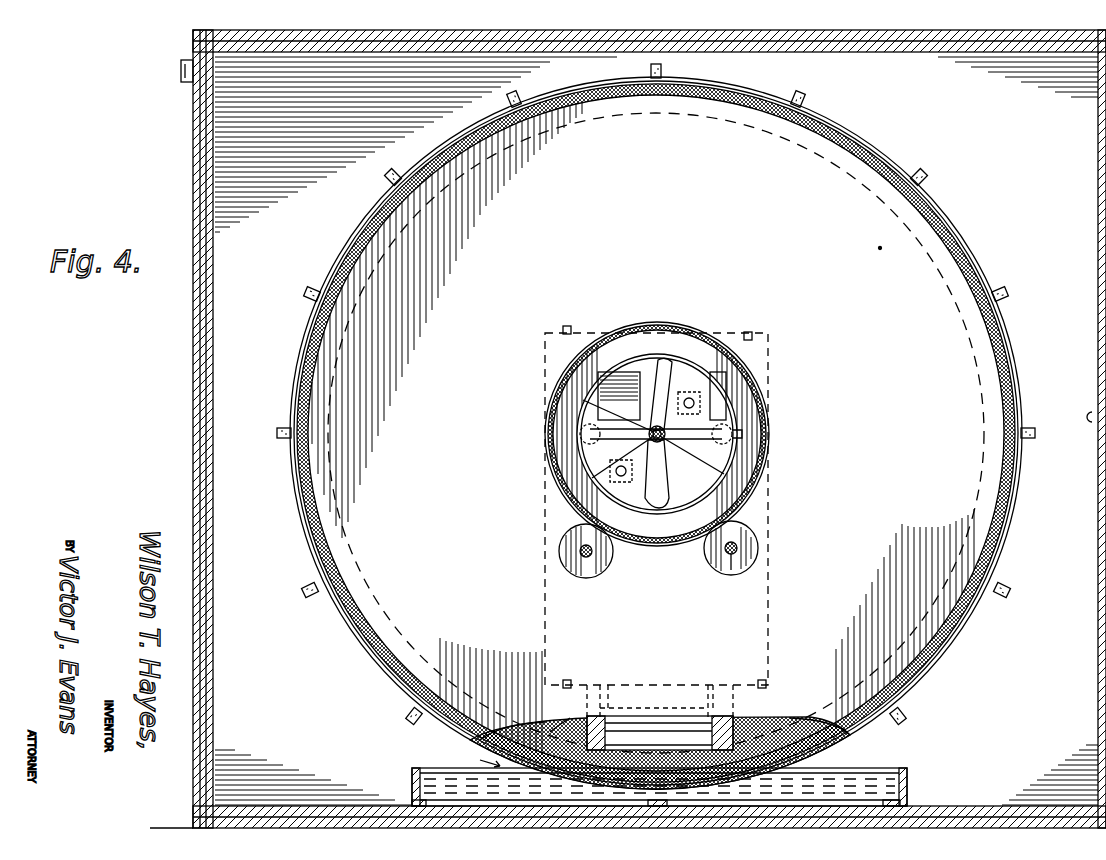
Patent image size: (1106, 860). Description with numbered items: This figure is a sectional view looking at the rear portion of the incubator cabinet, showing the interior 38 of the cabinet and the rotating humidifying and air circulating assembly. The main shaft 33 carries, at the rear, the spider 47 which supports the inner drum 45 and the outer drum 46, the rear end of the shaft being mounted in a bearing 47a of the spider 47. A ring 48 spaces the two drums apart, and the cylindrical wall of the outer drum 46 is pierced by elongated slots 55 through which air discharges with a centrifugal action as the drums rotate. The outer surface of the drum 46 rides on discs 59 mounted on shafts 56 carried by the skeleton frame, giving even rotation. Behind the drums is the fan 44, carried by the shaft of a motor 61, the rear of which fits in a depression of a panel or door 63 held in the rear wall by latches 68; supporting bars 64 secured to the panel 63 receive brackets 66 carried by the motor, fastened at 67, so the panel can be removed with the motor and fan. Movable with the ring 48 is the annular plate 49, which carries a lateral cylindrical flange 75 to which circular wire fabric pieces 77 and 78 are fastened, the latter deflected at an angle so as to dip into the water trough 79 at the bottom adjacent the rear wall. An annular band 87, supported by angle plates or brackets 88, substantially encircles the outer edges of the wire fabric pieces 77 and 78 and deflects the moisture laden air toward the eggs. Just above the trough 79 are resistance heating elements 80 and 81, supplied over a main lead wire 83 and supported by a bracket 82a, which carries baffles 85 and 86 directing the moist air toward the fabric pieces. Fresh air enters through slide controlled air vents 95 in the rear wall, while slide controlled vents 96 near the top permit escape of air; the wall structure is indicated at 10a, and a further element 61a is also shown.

The casing wall 10a is at (193, 40).
The slide controlled vents 96 is at (188, 84).
The interior of the cabinet 38 is at (234, 403).
The angle plates or brackets 88 is at (808, 100).
The annular band 87 is at (936, 194).
The annular plate 49 is at (880, 248).
The circular wire fabric pieces 77 is at (1010, 342).
The lateral cylindrical flange 75 is at (377, 605).
The latches 68 is at (565, 326).
The panel or door 63 is at (622, 334).
The elongated slots 55 is at (760, 378).
The ring 48 is at (734, 492).
The fan 44 is at (668, 372).
The shaft 33 is at (657, 467).
The brackets 66 is at (549, 428).
The fastening points of brackets 67 is at (730, 440).
The inner drum 45 is at (740, 425).
The outer drum 46 is at (770, 436).
The spider 47 is at (732, 470).
The bearing 47a is at (618, 416).
The supporting bars 64 is at (726, 388).
The slide controlled air vents 95 is at (656, 435).
The motor 61 is at (676, 500).
The vane 61a is at (768, 632).
The discs 59 is at (758, 550).
The shafts 56 is at (586, 578).
The circular wire fabric pieces 78 is at (850, 728).
The resistance heating element 80 is at (650, 746).
The bracket 82a is at (520, 728).
The baffle 85 is at (576, 722).
The main lead wire 83 is at (596, 684).
The resistance heating element 81 is at (640, 706).
The baffle 86 is at (688, 690).
The water trough 79 is at (880, 774).